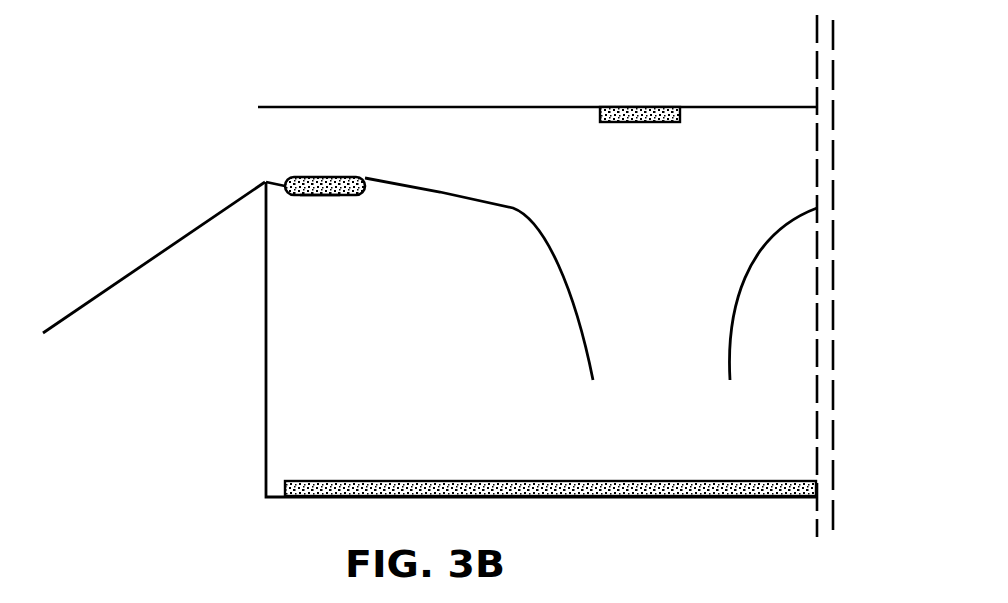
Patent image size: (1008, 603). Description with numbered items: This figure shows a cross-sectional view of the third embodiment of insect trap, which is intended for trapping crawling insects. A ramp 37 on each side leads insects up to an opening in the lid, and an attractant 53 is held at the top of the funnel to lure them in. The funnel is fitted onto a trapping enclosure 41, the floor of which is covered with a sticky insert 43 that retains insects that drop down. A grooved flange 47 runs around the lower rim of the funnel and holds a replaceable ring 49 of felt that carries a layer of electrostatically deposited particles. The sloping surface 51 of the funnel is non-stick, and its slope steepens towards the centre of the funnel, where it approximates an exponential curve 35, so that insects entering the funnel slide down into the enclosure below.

The exponential curve 35 is at (767, 245).
The ramp 37 is at (152, 258).
The trapping enclosure 41 is at (283, 429).
The sticky insert 43 is at (755, 483).
The grooved flange 47 is at (320, 195).
The replaceable ring 49 is at (285, 180).
The sloping surface 51 is at (440, 192).
The attractant 53 is at (648, 107).